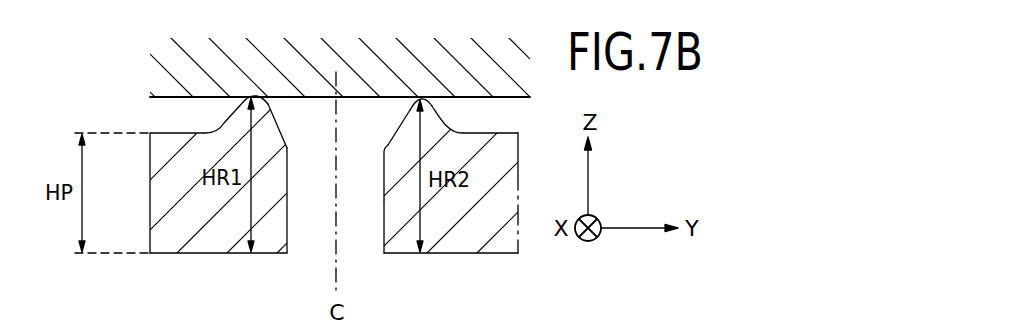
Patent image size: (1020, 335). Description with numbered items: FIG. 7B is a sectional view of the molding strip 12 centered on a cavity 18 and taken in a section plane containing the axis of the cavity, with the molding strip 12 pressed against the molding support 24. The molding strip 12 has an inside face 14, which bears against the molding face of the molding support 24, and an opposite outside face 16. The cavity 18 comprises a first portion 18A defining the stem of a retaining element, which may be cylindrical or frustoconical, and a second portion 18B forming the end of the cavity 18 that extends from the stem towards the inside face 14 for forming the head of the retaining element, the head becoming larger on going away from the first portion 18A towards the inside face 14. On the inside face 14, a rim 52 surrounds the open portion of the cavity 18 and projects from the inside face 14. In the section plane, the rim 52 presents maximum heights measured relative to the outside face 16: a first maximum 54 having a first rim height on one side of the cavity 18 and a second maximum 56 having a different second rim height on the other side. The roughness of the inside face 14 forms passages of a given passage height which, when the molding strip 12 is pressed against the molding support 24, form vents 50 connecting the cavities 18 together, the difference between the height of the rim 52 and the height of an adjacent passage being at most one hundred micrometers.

The molding strip 12 is at (151, 190).
The inside face 14 is at (507, 126).
The outside face 16 is at (234, 255).
The cavity 18 is at (310, 222).
The first portion 18A is at (384, 244).
The second portion 18B is at (384, 150).
The molding support 24 is at (462, 50).
The vents 50 is at (228, 97).
The rim 52 is at (236, 110).
The first maximum 54 is at (272, 103).
The second maximum 56 is at (413, 106).